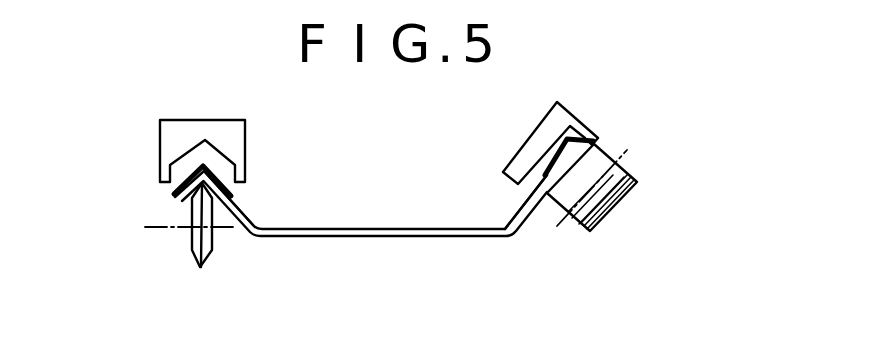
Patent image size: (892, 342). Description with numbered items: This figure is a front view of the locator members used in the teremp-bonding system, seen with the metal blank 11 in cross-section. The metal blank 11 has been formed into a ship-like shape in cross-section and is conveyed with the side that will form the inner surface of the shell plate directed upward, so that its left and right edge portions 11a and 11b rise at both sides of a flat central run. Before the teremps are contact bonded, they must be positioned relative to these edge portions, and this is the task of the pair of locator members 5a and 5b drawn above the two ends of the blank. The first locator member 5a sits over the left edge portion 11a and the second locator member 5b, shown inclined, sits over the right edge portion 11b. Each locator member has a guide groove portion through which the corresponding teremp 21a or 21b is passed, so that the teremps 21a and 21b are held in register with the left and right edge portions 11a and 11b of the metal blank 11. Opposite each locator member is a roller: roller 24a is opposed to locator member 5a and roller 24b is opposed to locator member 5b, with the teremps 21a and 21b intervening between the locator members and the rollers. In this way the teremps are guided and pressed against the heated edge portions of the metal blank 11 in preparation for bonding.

The locator member 5a is at (170, 133).
The locator member 5b is at (568, 111).
The metal blank 11 is at (348, 239).
The left edge portion 11a is at (247, 213).
The right edge portion 11b is at (523, 205).
The teremp 21a is at (228, 176).
The teremp 21b is at (580, 123).
The roller 24a is at (187, 250).
The roller 24b is at (612, 218).